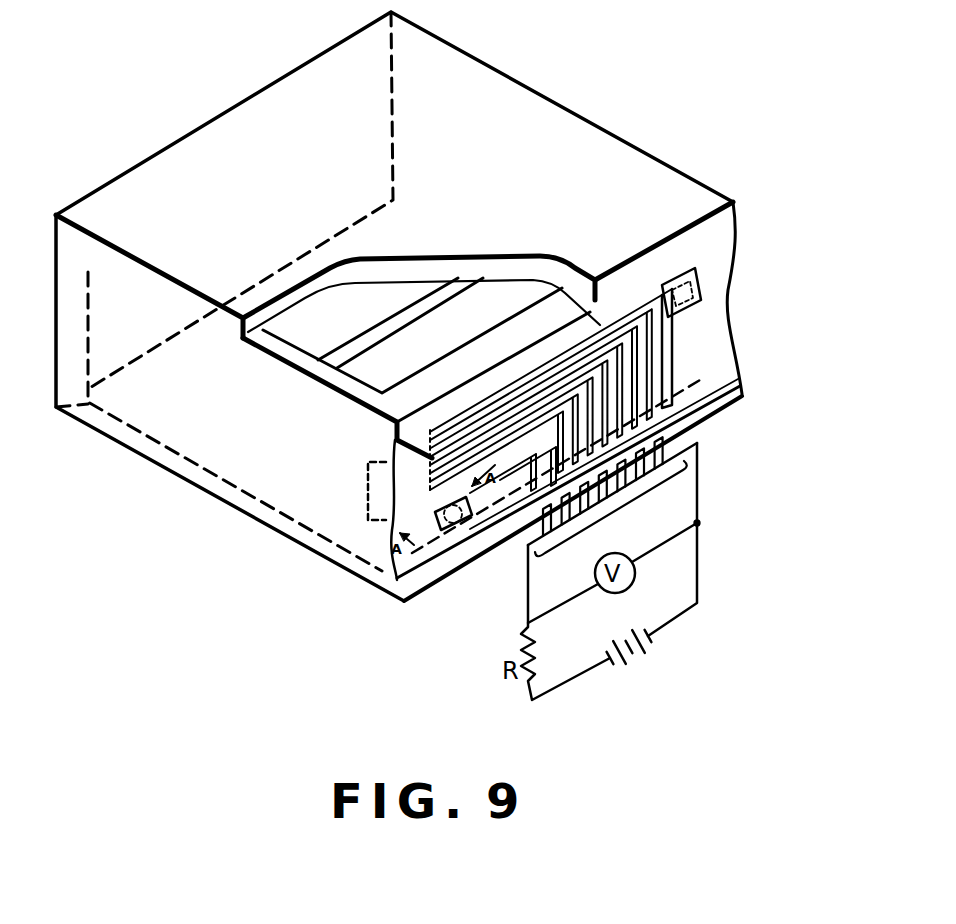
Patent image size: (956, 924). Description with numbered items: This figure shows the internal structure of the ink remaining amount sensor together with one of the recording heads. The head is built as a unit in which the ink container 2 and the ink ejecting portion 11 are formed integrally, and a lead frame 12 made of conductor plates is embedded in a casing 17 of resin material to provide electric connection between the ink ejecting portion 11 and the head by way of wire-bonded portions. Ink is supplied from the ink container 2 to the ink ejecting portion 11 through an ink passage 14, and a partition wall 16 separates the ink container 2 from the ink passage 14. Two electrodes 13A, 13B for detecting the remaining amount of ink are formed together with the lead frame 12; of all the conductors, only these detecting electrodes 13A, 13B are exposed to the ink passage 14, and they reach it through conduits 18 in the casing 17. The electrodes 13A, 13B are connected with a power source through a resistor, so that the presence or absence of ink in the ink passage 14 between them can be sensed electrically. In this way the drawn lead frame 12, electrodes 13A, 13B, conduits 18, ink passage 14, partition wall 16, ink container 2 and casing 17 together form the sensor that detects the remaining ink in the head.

The ink container 2 is at (277, 358).
The ink ejecting portion 11 is at (375, 510).
The lead frame 12 is at (617, 527).
The electrode 13A is at (700, 287).
The electrode 13B is at (455, 533).
The ink passage 14 is at (523, 293).
The partition wall 16 is at (430, 313).
The casing 17 is at (692, 202).
The conduit 18 is at (685, 268).